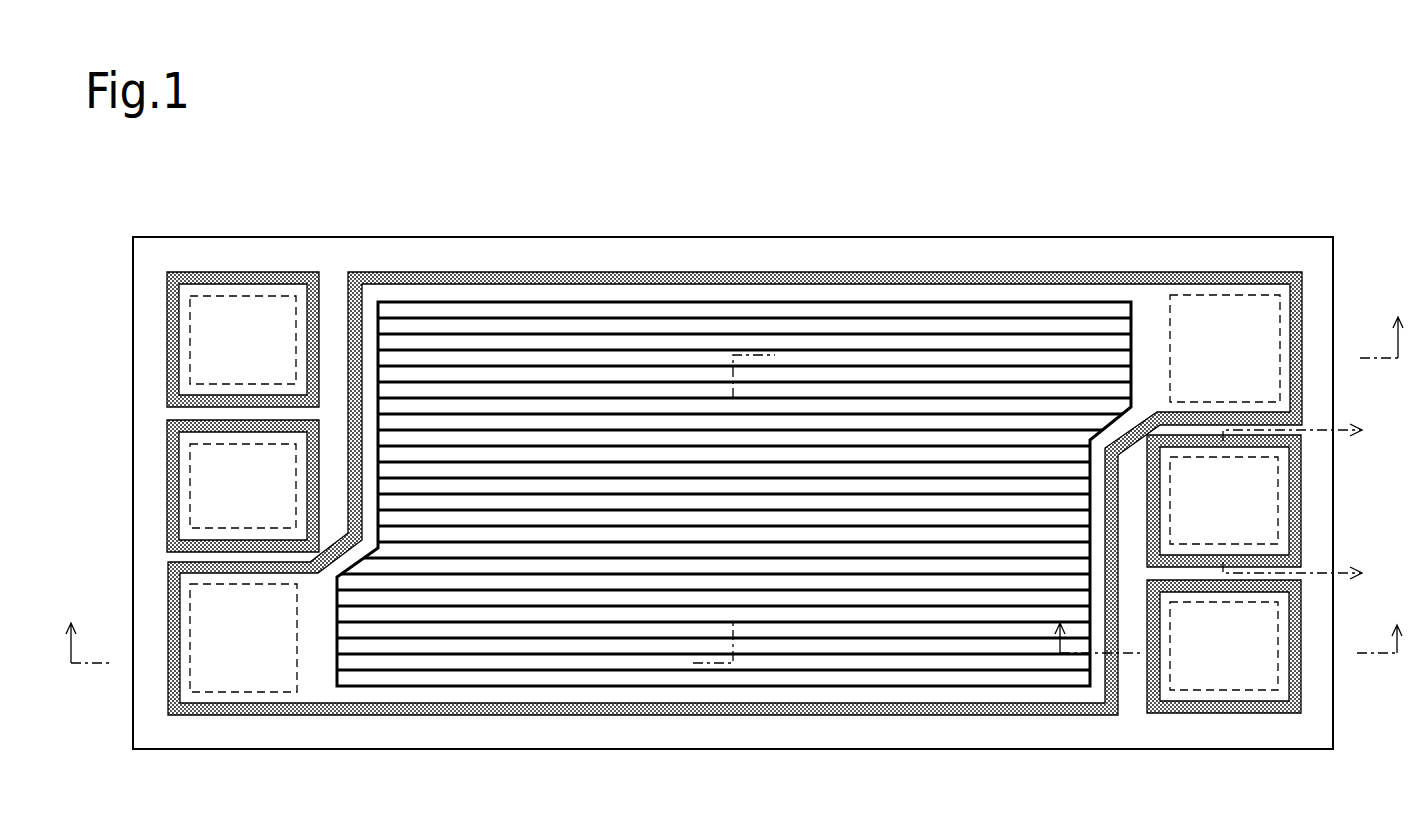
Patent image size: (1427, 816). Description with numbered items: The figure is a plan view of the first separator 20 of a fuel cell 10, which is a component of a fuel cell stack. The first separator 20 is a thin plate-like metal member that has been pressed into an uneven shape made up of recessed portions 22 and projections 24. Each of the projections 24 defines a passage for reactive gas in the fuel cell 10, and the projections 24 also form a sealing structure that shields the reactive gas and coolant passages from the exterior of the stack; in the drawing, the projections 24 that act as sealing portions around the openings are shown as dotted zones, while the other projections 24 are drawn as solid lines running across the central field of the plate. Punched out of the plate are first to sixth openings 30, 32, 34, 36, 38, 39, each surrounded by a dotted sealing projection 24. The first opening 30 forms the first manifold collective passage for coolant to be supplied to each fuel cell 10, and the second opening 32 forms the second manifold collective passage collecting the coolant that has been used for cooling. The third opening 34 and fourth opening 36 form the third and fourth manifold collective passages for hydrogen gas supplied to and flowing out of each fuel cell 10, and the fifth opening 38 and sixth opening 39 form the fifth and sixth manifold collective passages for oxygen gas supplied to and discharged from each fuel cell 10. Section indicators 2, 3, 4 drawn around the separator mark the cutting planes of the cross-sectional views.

The fuel cell 10 is at (1221, 113).
The first separator 20 is at (1012, 172).
The recessed portions 22 is at (1031, 244).
The projections 24 is at (1113, 302).
The first opening 30 is at (1211, 358).
The second opening 32 is at (229, 640).
The third opening 34 is at (1211, 646).
The fourth opening 36 is at (229, 340).
The fifth opening 38 is at (229, 486).
The sixth opening 39 is at (1211, 502).
The section line of FIG. 2 is at (1229, 621).
The section line of FIG. 3 is at (734, 473).
The section line of FIG. 4 is at (1304, 502).